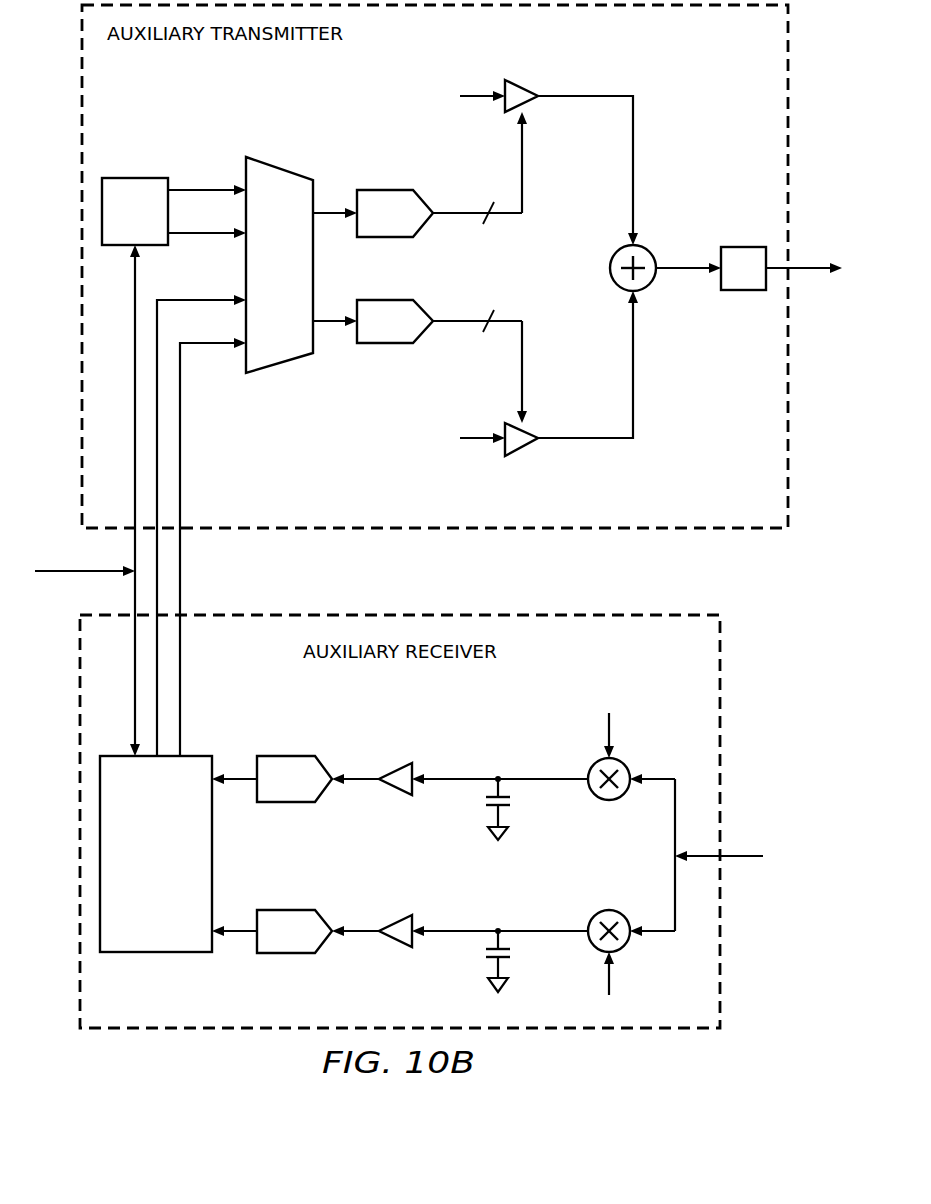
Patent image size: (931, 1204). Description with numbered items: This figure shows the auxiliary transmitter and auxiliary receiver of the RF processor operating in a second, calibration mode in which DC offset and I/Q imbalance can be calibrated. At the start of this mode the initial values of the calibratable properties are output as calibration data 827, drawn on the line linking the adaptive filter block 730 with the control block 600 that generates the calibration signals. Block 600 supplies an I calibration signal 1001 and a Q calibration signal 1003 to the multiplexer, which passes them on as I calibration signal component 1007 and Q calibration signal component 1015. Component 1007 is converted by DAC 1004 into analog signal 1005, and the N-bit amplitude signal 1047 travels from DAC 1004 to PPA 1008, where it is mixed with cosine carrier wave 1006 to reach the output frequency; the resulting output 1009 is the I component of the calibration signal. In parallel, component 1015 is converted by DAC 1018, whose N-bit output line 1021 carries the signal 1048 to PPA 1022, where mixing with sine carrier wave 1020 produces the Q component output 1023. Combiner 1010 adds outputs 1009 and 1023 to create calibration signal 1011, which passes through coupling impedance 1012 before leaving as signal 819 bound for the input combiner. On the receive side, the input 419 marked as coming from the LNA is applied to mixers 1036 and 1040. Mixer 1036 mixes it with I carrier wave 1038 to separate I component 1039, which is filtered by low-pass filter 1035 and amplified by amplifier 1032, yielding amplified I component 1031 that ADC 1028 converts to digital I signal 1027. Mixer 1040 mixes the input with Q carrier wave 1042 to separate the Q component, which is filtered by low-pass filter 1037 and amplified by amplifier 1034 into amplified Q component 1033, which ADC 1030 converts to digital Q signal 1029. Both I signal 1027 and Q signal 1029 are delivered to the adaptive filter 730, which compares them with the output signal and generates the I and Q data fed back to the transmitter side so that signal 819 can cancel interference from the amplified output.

The baseband transmit signal source 600 is at (152, 226).
The I calibration signal 1001 is at (218, 188).
The Q calibration signal 1003 is at (217, 238).
The I calibration signal component 1007 is at (328, 210).
The DAC 1004 is at (388, 239).
The analog signal 1005 is at (455, 210).
The cosine carrier wave 1006 is at (478, 94).
The PPA 1008 is at (528, 86).
The N-bit amplitude signal 1047 is at (524, 162).
The I component of the calibration signal 1009 is at (635, 128).
The combiner 1010 is at (612, 280).
The calibration signal 1011 is at (683, 265).
The coupling impedance 1012 is at (742, 291).
The signal 819 is at (808, 265).
The Q calibration signal component 1015 is at (328, 323).
The DAC 1018 is at (388, 345).
The second DAC output bus 1021 is at (460, 323).
The N-bit amplitude signal 1048 is at (524, 364).
The sine carrier wave 1020 is at (478, 440).
The PPA 1022 is at (527, 449).
The Q component of the calibration signal 1023 is at (636, 380).
The calibration data 827 is at (58, 571).
The adaptive filter 730 is at (175, 899).
The ADC 1028 is at (298, 754).
The I signal 1027 is at (240, 776).
The ADC 1030 is at (296, 907).
The Q signal 1029 is at (240, 934).
The amplifier 1032 is at (392, 768).
The amplified I component 1031 is at (368, 782).
The I component 1039 is at (462, 776).
The low-pass filter 1035 is at (512, 805).
The mixer 1036 is at (620, 799).
The I carrier wave 1038 is at (611, 727).
The signal from LNA 419 is at (748, 853).
The mixer 1040 is at (605, 910).
The Q carrier wave 1042 is at (611, 988).
The amplified Q component 1033 is at (396, 918).
The amplifier 1034 is at (360, 934).
The low-pass filter 1037 is at (512, 957).